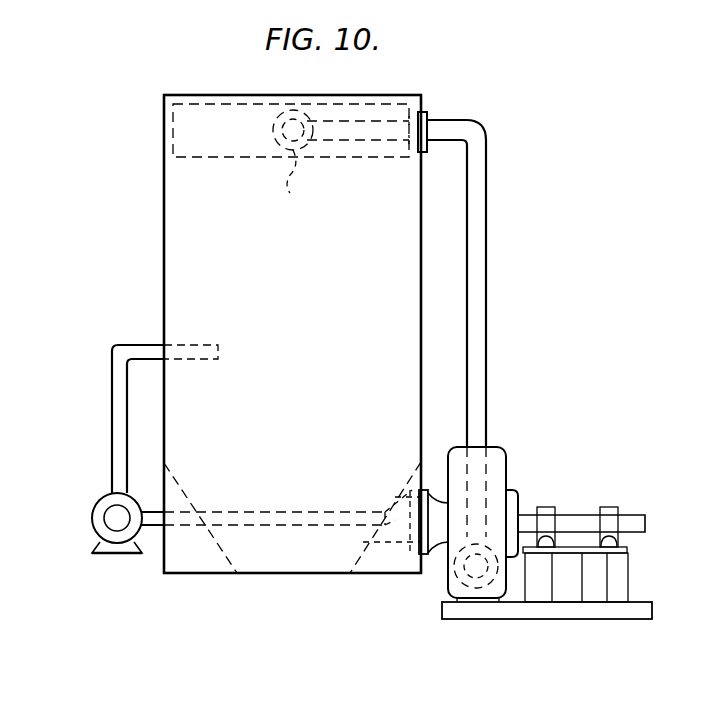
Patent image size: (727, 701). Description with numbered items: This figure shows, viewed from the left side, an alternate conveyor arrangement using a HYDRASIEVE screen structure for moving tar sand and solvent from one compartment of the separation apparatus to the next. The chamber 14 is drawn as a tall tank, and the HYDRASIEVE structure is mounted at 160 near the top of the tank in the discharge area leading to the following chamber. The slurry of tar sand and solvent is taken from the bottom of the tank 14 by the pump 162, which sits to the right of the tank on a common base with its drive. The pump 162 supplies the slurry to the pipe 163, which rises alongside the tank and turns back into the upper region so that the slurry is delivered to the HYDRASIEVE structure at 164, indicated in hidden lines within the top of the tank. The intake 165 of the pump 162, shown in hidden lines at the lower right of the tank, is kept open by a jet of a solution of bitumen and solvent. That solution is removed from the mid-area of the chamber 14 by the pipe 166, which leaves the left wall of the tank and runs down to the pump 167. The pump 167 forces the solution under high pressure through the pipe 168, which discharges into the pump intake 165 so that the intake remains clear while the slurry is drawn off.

The chamber 14 is at (341, 377).
The mounting location of HYDRASIEVE structure 160 is at (404, 86).
The pump 162 is at (497, 480).
The pipe 163 is at (484, 252).
The HYDRASIEVE feed point 164 is at (302, 157).
The pump intake 165 is at (403, 528).
The pipe 166 is at (133, 346).
The pump 167 is at (125, 502).
The pipe 168 is at (157, 527).